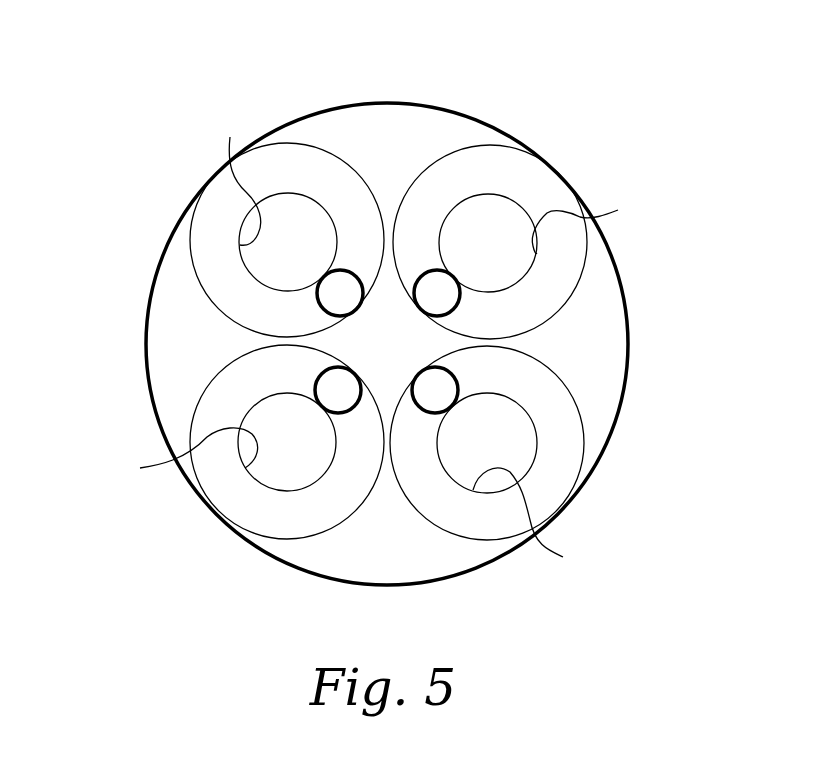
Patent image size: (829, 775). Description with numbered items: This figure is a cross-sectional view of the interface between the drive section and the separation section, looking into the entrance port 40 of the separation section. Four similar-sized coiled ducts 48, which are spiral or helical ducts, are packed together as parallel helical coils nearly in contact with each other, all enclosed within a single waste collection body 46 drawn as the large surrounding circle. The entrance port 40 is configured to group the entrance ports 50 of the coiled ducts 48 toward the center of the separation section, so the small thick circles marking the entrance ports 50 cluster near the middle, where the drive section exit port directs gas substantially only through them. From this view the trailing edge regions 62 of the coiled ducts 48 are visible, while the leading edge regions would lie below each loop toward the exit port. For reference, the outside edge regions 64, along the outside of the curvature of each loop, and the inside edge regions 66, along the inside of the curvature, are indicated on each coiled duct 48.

The entrance port 40 is at (134, 139).
The waste collection body 46 is at (147, 355).
The coiled duct 48 is at (389, 345).
The entrance port 50 is at (349, 271).
The trailing edge region 62 is at (232, 292).
The outside edge region 64 is at (193, 272).
The inside edge region 66 is at (379, 343).